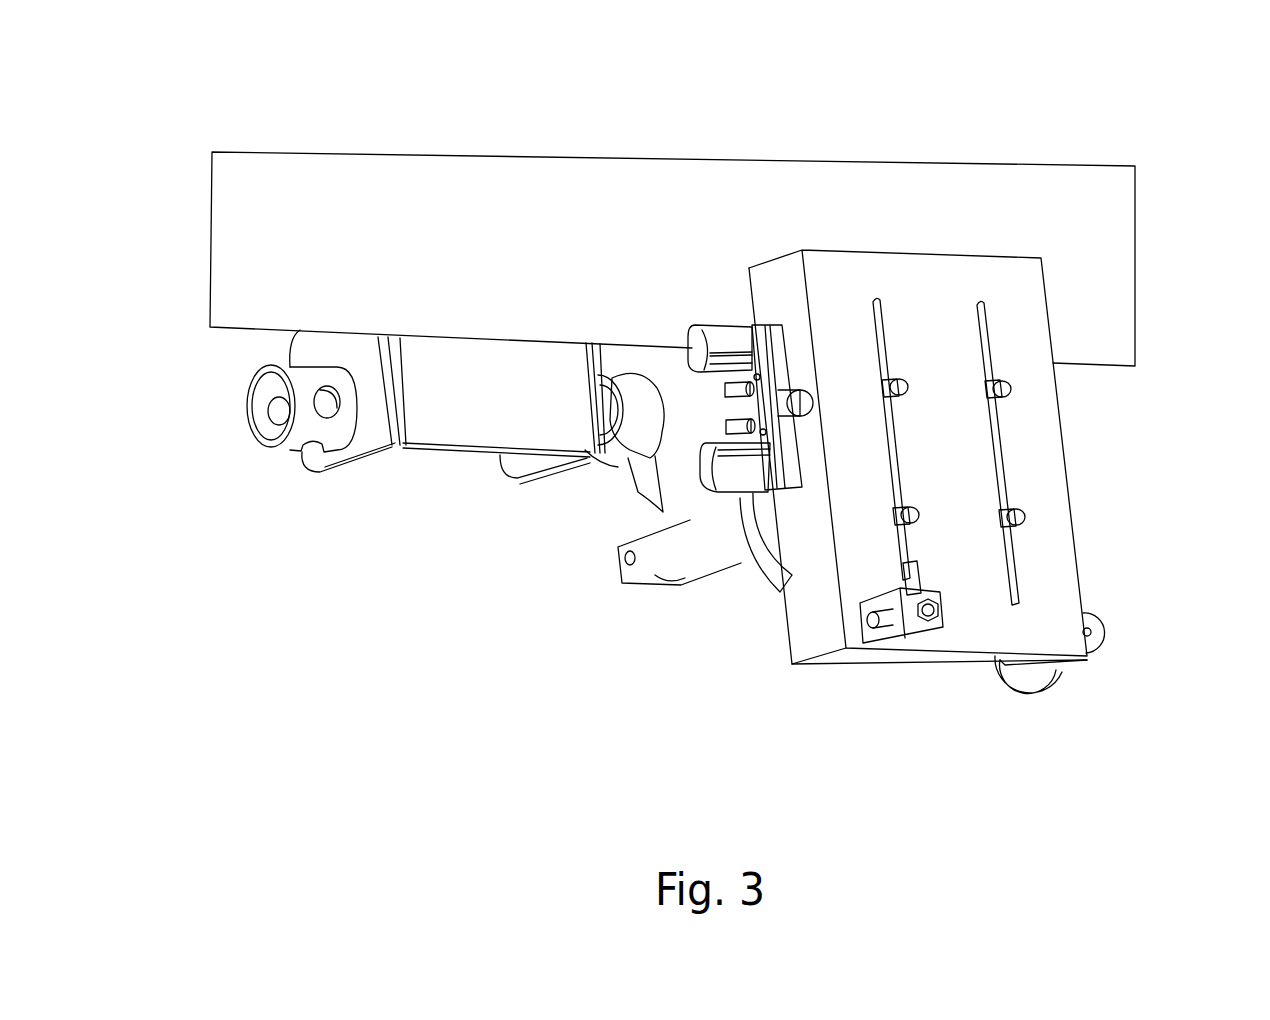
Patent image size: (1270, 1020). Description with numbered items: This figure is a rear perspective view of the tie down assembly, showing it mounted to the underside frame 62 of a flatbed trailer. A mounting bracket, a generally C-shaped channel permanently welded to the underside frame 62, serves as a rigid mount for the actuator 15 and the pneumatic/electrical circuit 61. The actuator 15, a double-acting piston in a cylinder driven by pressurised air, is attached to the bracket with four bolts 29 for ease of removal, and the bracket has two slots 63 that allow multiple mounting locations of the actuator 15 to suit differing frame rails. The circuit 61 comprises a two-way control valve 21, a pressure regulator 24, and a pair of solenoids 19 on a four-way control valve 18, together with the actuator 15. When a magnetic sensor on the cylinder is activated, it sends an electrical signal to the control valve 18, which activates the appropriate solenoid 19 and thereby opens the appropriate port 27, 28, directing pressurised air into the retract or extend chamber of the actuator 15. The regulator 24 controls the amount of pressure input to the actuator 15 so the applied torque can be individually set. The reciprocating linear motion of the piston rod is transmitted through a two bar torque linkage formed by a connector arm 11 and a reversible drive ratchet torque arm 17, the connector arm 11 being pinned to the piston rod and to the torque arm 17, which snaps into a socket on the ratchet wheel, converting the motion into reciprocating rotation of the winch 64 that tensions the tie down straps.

The connector arm 11 is at (688, 533).
The actuator 15 is at (1012, 298).
The reversible drive ratchet torque arm 17 is at (649, 398).
The 4-way control valve 18 is at (778, 427).
The solenoids 19 is at (732, 337).
The 2-way control valve 21 is at (917, 590).
The pressure regulator 24 is at (1092, 628).
The port 27 is at (740, 390).
The port 28 is at (737, 428).
The bolts 29 is at (1007, 388).
The pneumatic/electrical circuit 61 is at (1063, 738).
The underside frame 62 is at (1032, 194).
The slots 63 is at (1000, 453).
The winch 64 is at (337, 507).